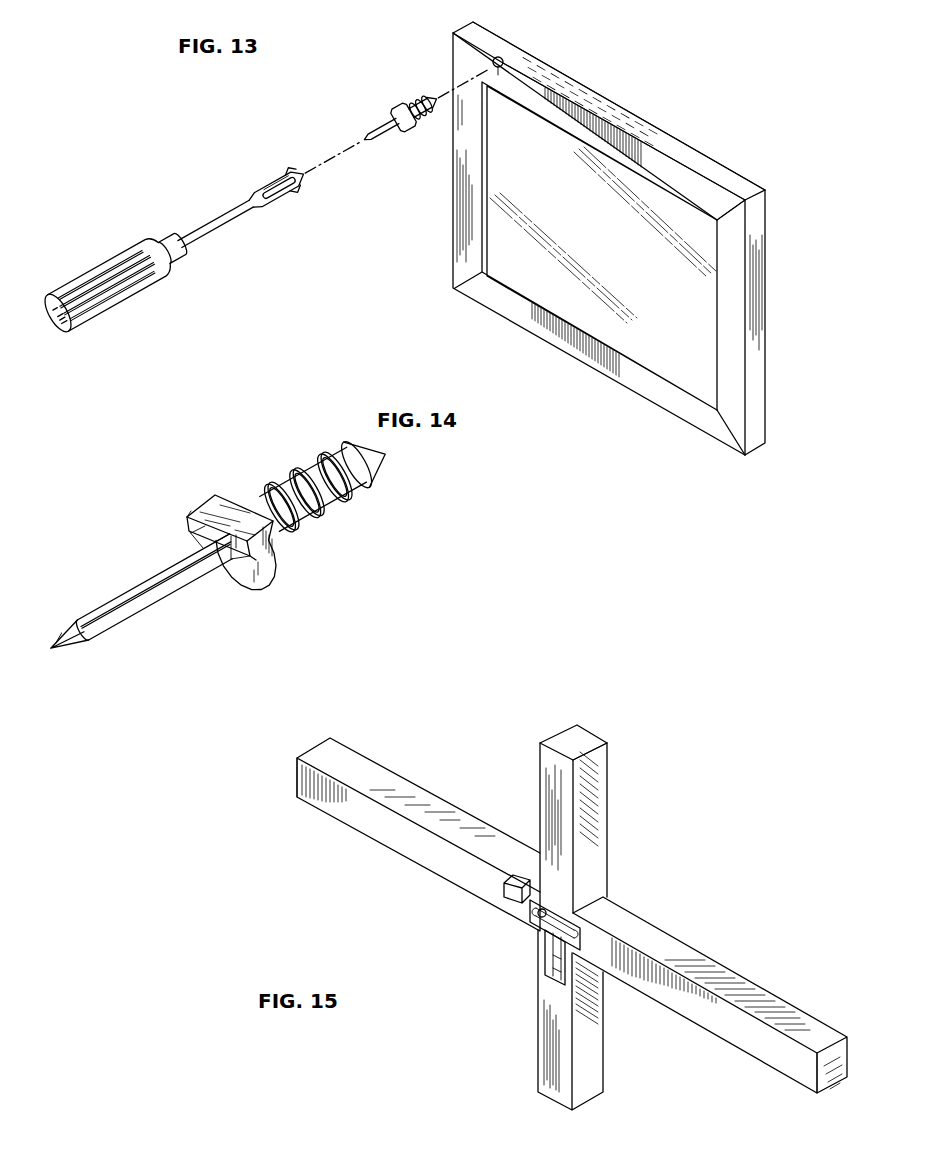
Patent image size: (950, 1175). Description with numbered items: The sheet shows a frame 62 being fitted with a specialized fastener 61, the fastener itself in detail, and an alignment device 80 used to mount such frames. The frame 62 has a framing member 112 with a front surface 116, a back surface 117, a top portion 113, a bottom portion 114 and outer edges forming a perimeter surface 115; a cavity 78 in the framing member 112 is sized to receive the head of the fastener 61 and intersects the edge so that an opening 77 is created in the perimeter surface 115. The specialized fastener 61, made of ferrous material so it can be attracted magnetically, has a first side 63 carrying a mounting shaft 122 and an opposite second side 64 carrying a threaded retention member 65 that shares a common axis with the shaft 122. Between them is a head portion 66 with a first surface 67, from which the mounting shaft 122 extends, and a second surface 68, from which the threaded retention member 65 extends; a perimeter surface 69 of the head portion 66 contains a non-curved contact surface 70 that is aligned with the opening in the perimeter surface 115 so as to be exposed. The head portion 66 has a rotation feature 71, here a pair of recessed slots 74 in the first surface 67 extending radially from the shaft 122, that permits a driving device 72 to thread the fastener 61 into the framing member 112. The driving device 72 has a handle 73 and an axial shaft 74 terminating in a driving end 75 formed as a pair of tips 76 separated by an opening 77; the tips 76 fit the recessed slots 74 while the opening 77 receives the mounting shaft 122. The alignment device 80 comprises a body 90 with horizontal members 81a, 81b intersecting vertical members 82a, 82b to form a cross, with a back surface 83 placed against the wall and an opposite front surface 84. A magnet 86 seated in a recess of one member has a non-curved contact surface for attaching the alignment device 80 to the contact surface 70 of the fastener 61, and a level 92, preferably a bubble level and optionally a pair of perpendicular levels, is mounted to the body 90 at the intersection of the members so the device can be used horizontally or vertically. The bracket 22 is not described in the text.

In FIG. 15, the joint bracket 22 is at (573, 913).
In FIG. 13, the specialized fastener 61 is at (408, 142).
In FIG. 14, the specialized fastener 61 is at (191, 488).
In FIG. 13, the frame 62 is at (782, 382).
In FIG. 14, the first side 63 is at (97, 588).
In FIG. 14, the second side 64 is at (330, 535).
In FIG. 14, the threaded retention member 65 is at (317, 467).
In FIG. 14, the head portion 66 is at (244, 612).
In FIG. 14, the first surface 67 is at (188, 520).
In FIG. 14, the second surface 68 is at (220, 496).
In FIG. 14, the perimeter surface 69 is at (255, 577).
In FIG. 14, the contact surface 70 is at (248, 524).
In FIG. 14, the rotation feature 71 is at (192, 537).
In FIG. 13, the driving device 72 is at (146, 232).
In FIG. 13, the handle 73 is at (70, 285).
In FIG. 13, the axial shaft / recessed slots 74 is at (210, 233).
In FIG. 14, the axial shaft / recessed slots 74 is at (232, 560).
In FIG. 13, the driving end 75 is at (277, 204).
In FIG. 13, the tips 76 is at (289, 177).
In FIG. 13, the opening 77 is at (298, 183).
In FIG. 13, the cavity 78 is at (498, 67).
In FIG. 15, the alignment device 80 is at (500, 788).
In FIG. 15, the horizontal member 81a is at (343, 800).
In FIG. 15, the horizontal member 81b is at (797, 1062).
In FIG. 15, the vertical member 82a is at (583, 1070).
In FIG. 15, the vertical member 82b is at (567, 743).
In FIG. 15, the back surface 83 is at (610, 762).
In FIG. 15, the front surface 84 is at (443, 852).
In FIG. 15, the magnet 86 is at (517, 904).
In FIG. 15, the body 90 is at (657, 945).
In FIG. 15, the level 92 is at (544, 958).
In FIG. 13, the framing member 112 is at (743, 195).
In FIG. 13, the top portion 113 is at (487, 29).
In FIG. 13, the bottom portion 114 is at (667, 412).
In FIG. 13, the perimeter surface 115 is at (759, 253).
In FIG. 13, the front surface 116 is at (718, 156).
In FIG. 13, the back surface 117 is at (673, 168).
In FIG. 14, the mounting shaft 122 is at (108, 630).